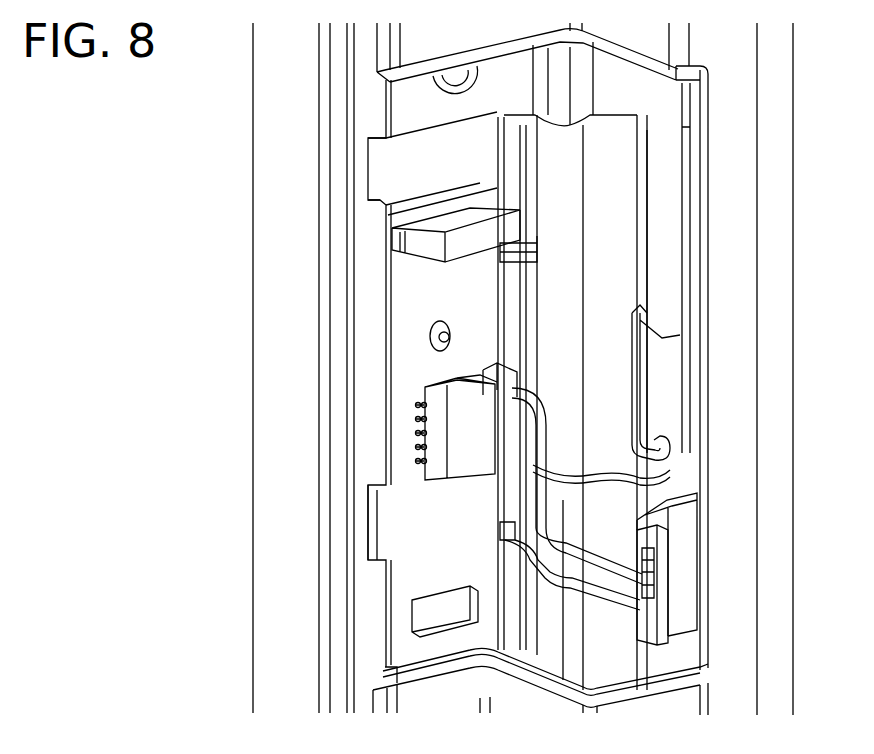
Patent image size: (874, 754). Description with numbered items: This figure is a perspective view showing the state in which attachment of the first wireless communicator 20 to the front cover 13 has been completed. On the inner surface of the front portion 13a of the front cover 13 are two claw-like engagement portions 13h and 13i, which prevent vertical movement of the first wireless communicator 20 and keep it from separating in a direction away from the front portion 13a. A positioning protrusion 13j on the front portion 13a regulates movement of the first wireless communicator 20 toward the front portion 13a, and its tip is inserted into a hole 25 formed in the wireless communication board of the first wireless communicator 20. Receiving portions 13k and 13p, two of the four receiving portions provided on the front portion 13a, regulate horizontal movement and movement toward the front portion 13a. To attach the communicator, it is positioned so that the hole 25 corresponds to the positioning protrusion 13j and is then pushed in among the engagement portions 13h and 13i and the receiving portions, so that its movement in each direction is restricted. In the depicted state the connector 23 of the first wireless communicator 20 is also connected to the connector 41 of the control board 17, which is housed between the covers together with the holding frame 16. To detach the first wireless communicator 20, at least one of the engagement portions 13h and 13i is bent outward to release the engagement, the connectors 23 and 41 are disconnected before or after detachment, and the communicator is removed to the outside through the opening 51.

The front cover 13 is at (250, 450).
The front portion 13a is at (398, 167).
The engagement portion 13h is at (438, 235).
The engagement portion 13i is at (443, 618).
The positioning protrusion 13j is at (432, 338).
The receiving portion 13k is at (525, 245).
The receiving portion 13p is at (503, 530).
The holding frame 16 is at (628, 388).
The control board 17 is at (678, 476).
The first wireless communicator 20 is at (386, 526).
The connector 23 is at (668, 607).
The hole 25 is at (449, 330).
The connector 41 is at (690, 550).
The opening 51 is at (618, 279).